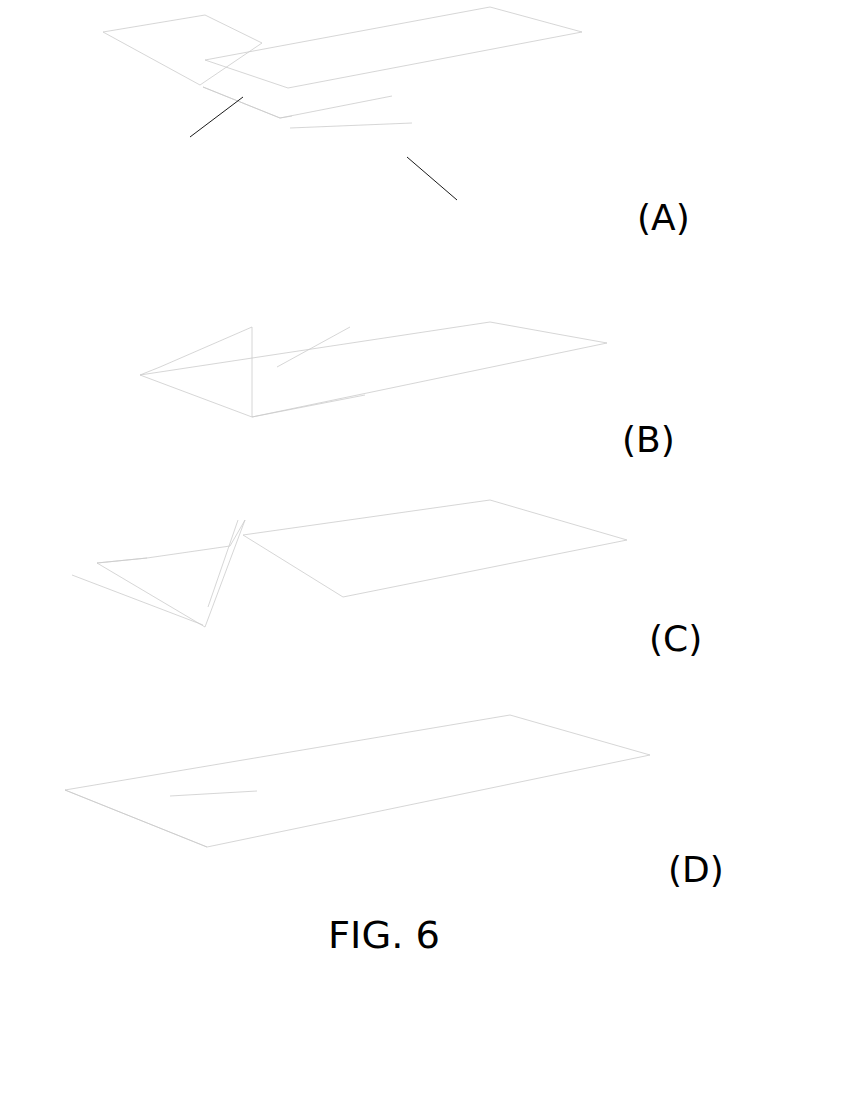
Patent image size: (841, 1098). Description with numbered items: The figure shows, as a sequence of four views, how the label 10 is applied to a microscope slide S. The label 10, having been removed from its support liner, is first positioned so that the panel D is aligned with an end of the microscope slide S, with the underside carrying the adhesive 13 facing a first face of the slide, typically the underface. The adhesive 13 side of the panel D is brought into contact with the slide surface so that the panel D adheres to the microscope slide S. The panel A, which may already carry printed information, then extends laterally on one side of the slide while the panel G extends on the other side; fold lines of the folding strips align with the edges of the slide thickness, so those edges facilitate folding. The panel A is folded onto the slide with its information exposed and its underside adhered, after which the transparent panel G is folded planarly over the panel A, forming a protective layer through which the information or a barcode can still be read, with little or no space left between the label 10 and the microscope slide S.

The label 10 is at (253, 120).
The adhesive 13 is at (303, 102).
The microscope slide S is at (537, 820).
The panel A is at (179, 321).
The panel D is at (297, 102).
The panel G is at (291, 465).